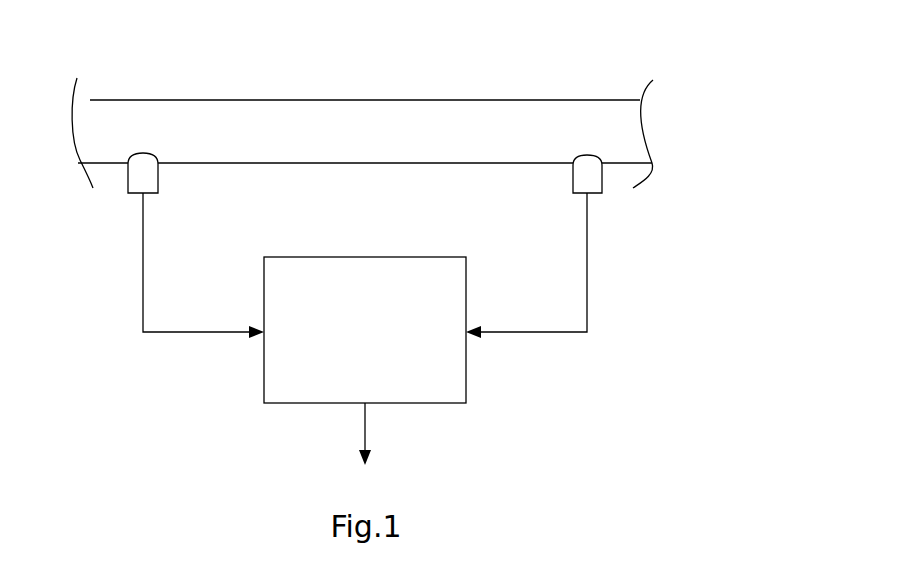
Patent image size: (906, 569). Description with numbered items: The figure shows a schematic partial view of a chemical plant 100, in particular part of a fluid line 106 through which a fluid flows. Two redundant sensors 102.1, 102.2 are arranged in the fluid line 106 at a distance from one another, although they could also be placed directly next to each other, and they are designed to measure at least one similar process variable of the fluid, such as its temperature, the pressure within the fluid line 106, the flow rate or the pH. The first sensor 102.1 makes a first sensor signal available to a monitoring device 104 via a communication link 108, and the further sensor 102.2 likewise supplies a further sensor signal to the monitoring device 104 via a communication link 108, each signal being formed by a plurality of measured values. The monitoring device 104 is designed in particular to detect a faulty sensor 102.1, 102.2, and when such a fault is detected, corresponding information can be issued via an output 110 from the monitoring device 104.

The chemical plant 100 is at (700, 66).
The first sensor 102.1 is at (148, 177).
The further sensor 102.2 is at (580, 178).
The monitoring device 104 is at (382, 341).
The fluid line 106 is at (300, 110).
The communication link 108 is at (140, 272).
The output 110 is at (370, 433).